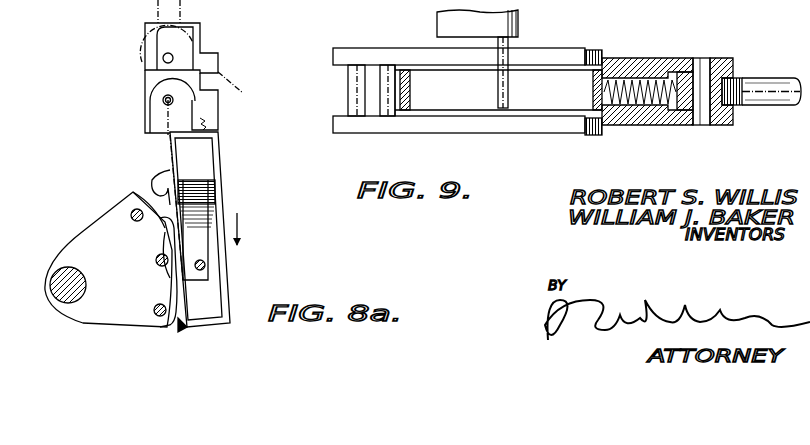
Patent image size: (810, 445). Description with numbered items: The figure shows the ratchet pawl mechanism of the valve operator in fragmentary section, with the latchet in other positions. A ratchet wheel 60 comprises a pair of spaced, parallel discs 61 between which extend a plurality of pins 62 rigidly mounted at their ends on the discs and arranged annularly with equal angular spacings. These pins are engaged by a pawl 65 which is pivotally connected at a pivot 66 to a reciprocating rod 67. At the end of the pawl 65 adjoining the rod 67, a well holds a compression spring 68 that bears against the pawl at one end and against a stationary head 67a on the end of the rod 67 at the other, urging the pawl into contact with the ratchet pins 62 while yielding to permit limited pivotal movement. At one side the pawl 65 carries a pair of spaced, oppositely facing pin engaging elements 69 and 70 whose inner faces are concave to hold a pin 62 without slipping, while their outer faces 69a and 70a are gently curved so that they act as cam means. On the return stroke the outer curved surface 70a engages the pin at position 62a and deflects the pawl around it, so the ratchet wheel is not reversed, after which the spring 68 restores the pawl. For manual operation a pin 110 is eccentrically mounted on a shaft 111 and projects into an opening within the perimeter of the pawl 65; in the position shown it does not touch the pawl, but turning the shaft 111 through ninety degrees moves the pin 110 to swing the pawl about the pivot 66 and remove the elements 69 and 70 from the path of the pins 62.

In FIG. 8a, the ratchet wheel 60 is at (82, 230).
In FIG. 9, the ratchet wheel 60 is at (567, 134).
In FIG. 9, the discs 61 is at (333, 57).
In FIG. 8a, the pins 62 is at (153, 310).
In FIG. 9, the pins 62 is at (352, 93).
In FIG. 8a, the pin position 62a is at (155, 260).
In FIG. 8a, the pawl 65 is at (228, 191).
In FIG. 9, the pawl 65 is at (480, 97).
In FIG. 8a, the pivot 66 is at (165, 100).
In FIG. 9, the pivot 66 is at (701, 58).
In FIG. 9, the reciprocating rod 67 is at (765, 80).
In FIG. 8a, the stationary head 67a is at (203, 104).
In FIG. 9, the stationary head 67a is at (717, 108).
In FIG. 9, the compression spring 68 is at (645, 60).
In FIG. 8a, the pin engaging element 69 is at (150, 178).
In FIG. 8a, the outer face 69a is at (152, 184).
In FIG. 8a, the pin engaging element 70 is at (162, 276).
In FIG. 8a, the outer curved surface 70a is at (178, 330).
In FIG. 8a, the pin 110 is at (205, 265).
In FIG. 9, the pin 110 is at (505, 95).
In FIG. 9, the shaft 111 is at (512, 25).